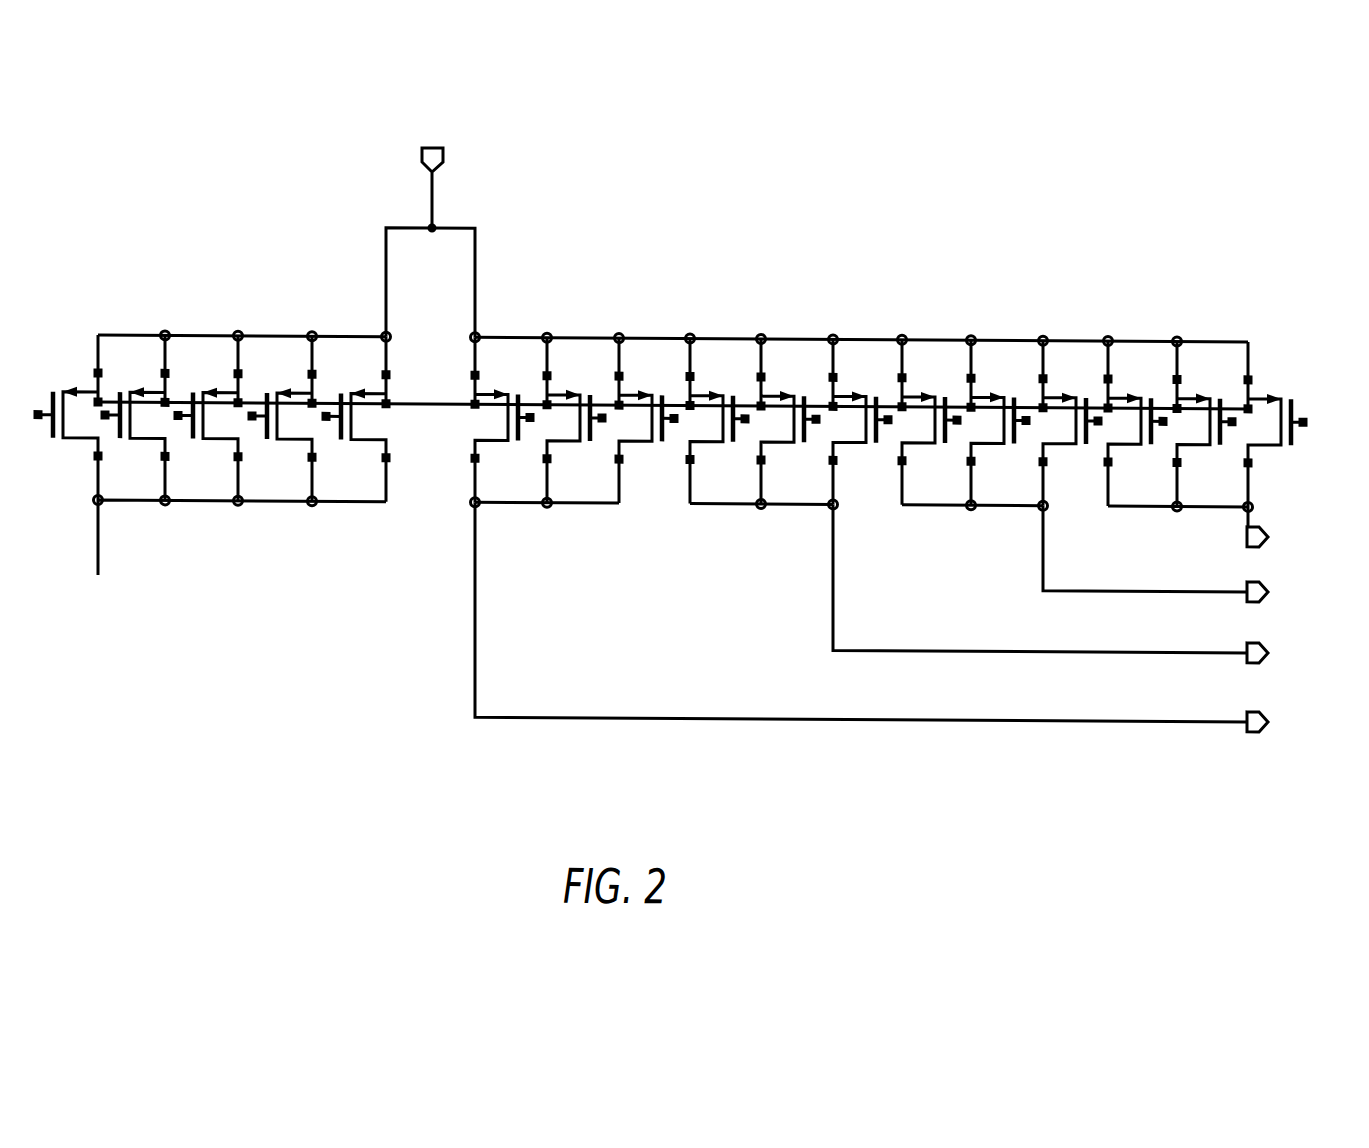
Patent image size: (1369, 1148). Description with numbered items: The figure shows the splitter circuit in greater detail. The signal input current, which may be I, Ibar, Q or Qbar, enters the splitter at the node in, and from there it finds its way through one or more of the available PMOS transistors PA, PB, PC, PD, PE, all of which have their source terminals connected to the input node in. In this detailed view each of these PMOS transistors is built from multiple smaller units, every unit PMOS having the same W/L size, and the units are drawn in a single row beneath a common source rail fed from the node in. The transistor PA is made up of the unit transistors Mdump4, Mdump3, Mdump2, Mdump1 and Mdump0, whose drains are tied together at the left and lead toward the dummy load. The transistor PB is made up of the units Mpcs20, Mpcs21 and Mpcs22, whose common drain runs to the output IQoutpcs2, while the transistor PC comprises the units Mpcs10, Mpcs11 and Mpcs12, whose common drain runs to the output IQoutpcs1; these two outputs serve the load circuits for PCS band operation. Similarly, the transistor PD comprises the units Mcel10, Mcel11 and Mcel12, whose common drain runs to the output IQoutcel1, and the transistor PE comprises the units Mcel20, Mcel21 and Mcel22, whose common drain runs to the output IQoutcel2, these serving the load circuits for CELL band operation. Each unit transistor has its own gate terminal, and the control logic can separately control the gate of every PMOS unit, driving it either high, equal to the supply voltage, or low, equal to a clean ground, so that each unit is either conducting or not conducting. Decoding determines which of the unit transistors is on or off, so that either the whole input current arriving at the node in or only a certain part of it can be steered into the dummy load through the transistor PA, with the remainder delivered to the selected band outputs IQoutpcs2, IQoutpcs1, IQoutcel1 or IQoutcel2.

The input node in is at (430, 228).
The PMOS transistor PA is at (223, 268).
The PMOS transistor PB is at (565, 278).
The PMOS transistor PC is at (773, 275).
The PMOS transistor PD is at (985, 274).
The PMOS transistor PE is at (1162, 273).
The dump transistor Mdump4 is at (103, 372).
The dump transistor Mdump3 is at (170, 372).
The dump transistor Mdump2 is at (243, 372).
The dump transistor Mdump1 is at (317, 372).
The diode-connected dump transistor Mdump0 is at (391, 373).
The pcs2 mirror transistor Mpcs20 is at (467, 375).
The pcs2 mirror transistor Mpcs21 is at (541, 374).
The pcs2 mirror transistor Mpcs22 is at (613, 374).
The pcs1 mirror transistor Mpcs10 is at (684, 374).
The pcs1 mirror transistor Mpcs11 is at (755, 374).
The pcs1 mirror transistor Mpcs12 is at (827, 374).
The cel1 mirror transistor Mcel10 is at (896, 374).
The cel1 mirror transistor Mcel11 is at (965, 374).
The cel1 mirror transistor Mcel12 is at (1037, 374).
The cel2 mirror transistor Mcel20 is at (1102, 374).
The cel2 mirror transistor Mcel21 is at (1171, 374).
The cel2 mirror transistor Mcel22 is at (1242, 374).
The output current port IQoutcel2 is at (1297, 529).
The output current port IQoutcel1 is at (1195, 557).
The output current port IQoutpcs1 is at (1091, 586).
The output current port IQoutpcs2 is at (912, 620).